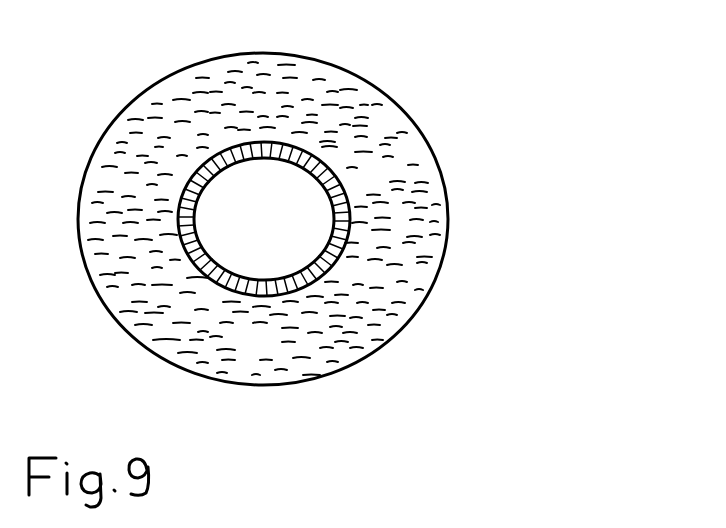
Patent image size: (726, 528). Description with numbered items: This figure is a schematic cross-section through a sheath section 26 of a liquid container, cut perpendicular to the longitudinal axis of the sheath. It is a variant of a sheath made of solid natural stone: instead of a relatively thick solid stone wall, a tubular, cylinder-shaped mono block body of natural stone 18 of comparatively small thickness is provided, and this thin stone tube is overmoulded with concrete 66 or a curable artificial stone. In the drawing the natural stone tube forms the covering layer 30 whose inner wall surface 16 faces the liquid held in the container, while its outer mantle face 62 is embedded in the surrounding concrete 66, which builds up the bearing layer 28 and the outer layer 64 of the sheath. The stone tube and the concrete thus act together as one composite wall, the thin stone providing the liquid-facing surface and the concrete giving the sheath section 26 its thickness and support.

The inner wall surface 16 is at (280, 160).
The natural stone 18 is at (195, 195).
The sheath section 26 is at (313, 219).
The bearing layer 28 is at (372, 348).
The outer layer 64 is at (304, 219).
The covering layer 30 is at (335, 257).
The outer mantle face 62 is at (343, 182).
The concrete 66 is at (275, 356).